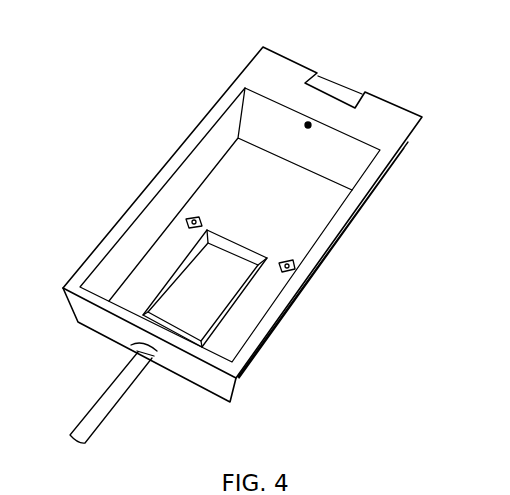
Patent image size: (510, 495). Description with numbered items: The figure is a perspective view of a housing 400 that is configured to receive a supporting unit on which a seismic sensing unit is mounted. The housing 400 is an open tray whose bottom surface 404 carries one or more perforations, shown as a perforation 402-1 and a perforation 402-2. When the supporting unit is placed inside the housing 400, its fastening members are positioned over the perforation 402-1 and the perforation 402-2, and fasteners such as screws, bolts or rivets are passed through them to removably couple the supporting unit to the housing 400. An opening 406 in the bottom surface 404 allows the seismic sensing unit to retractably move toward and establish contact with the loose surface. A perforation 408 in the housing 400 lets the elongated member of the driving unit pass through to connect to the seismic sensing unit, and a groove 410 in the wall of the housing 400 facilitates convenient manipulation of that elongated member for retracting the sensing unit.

The housing 400 is at (174, 120).
The perforation 402-1 is at (204, 216).
The perforation 402-2 is at (289, 259).
The bottom surface 404 is at (262, 199).
The opening 406 is at (202, 264).
The perforation 408 is at (312, 130).
The groove 410 is at (344, 84).